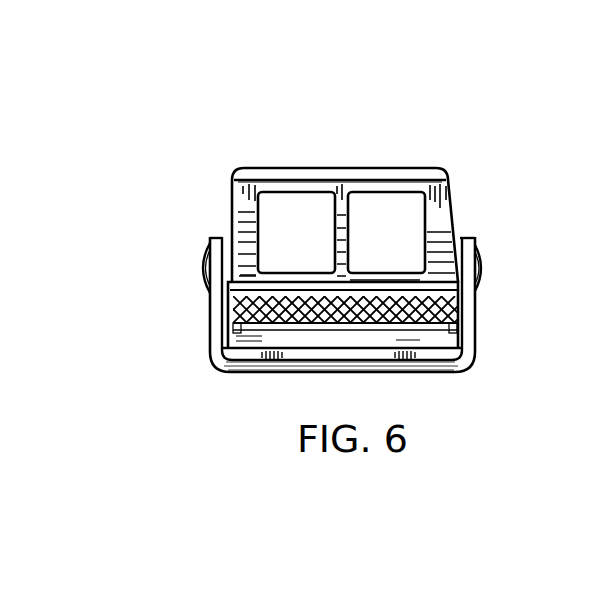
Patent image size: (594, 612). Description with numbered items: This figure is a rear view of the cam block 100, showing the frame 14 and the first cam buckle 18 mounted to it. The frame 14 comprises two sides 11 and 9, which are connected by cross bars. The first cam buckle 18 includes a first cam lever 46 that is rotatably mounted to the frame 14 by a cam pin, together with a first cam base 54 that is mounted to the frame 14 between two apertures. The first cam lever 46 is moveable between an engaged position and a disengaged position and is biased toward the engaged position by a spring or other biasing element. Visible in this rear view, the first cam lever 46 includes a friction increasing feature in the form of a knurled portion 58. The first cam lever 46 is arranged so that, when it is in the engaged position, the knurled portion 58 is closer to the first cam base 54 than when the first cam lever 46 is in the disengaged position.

The cam block 100 is at (438, 80).
The first cam buckle 18 is at (420, 149).
The first cam lever 46 is at (441, 203).
The side 11 is at (472, 240).
The side 9 is at (212, 240).
The knurled portion 58 is at (470, 320).
The frame 14 is at (482, 342).
The first cam base 54 is at (214, 348).